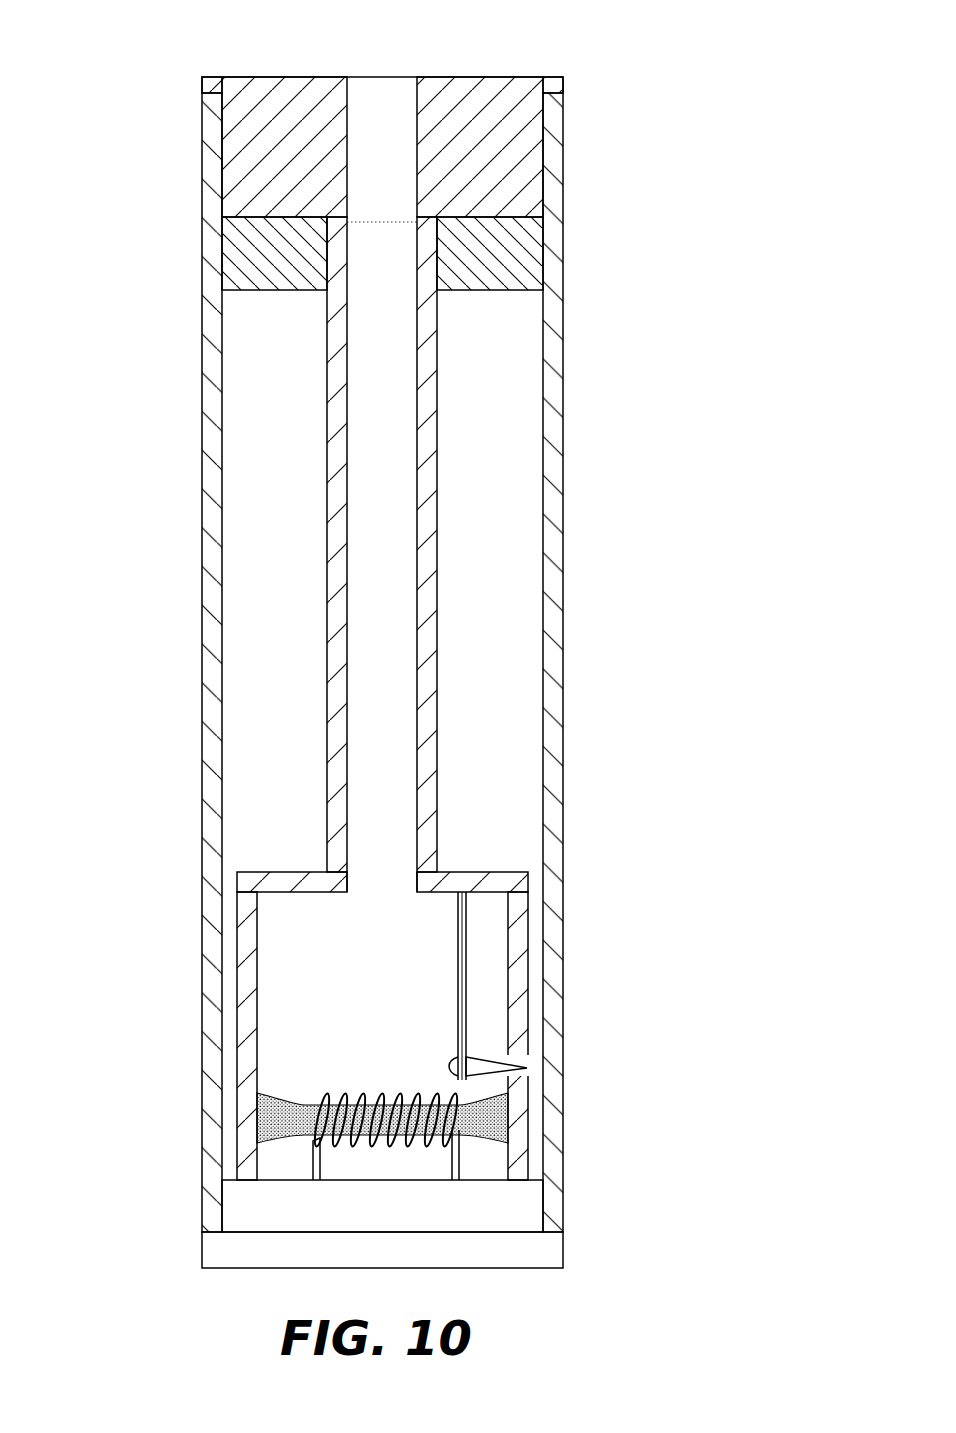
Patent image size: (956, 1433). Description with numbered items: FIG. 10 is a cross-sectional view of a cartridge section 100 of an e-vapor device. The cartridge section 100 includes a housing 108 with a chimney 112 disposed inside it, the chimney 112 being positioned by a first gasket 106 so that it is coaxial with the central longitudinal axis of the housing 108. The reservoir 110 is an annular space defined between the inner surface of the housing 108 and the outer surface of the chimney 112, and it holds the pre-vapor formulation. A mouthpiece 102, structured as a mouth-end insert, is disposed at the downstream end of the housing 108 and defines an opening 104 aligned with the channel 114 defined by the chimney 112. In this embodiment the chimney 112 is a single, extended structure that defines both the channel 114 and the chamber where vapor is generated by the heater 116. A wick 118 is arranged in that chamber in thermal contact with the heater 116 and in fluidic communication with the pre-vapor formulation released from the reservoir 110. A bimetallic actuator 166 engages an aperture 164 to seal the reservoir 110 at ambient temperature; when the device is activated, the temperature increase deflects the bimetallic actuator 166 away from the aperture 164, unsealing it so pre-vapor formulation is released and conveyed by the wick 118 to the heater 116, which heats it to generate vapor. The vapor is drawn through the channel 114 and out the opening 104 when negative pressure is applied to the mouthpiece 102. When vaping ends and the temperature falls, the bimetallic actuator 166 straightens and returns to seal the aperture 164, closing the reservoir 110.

The cartridge section 100 is at (118, 59).
The mouthpiece 102 is at (513, 93).
The opening 104 is at (380, 95).
The first gasket 106 is at (497, 252).
The housing 108 is at (550, 421).
The reservoir 110 is at (263, 495).
The chimney 112 is at (425, 642).
The channel 114 is at (368, 663).
The heater 116 is at (327, 1093).
The wick 118 is at (300, 1097).
The aperture 164 is at (527, 1068).
The bimetallic actuator 166 is at (436, 989).